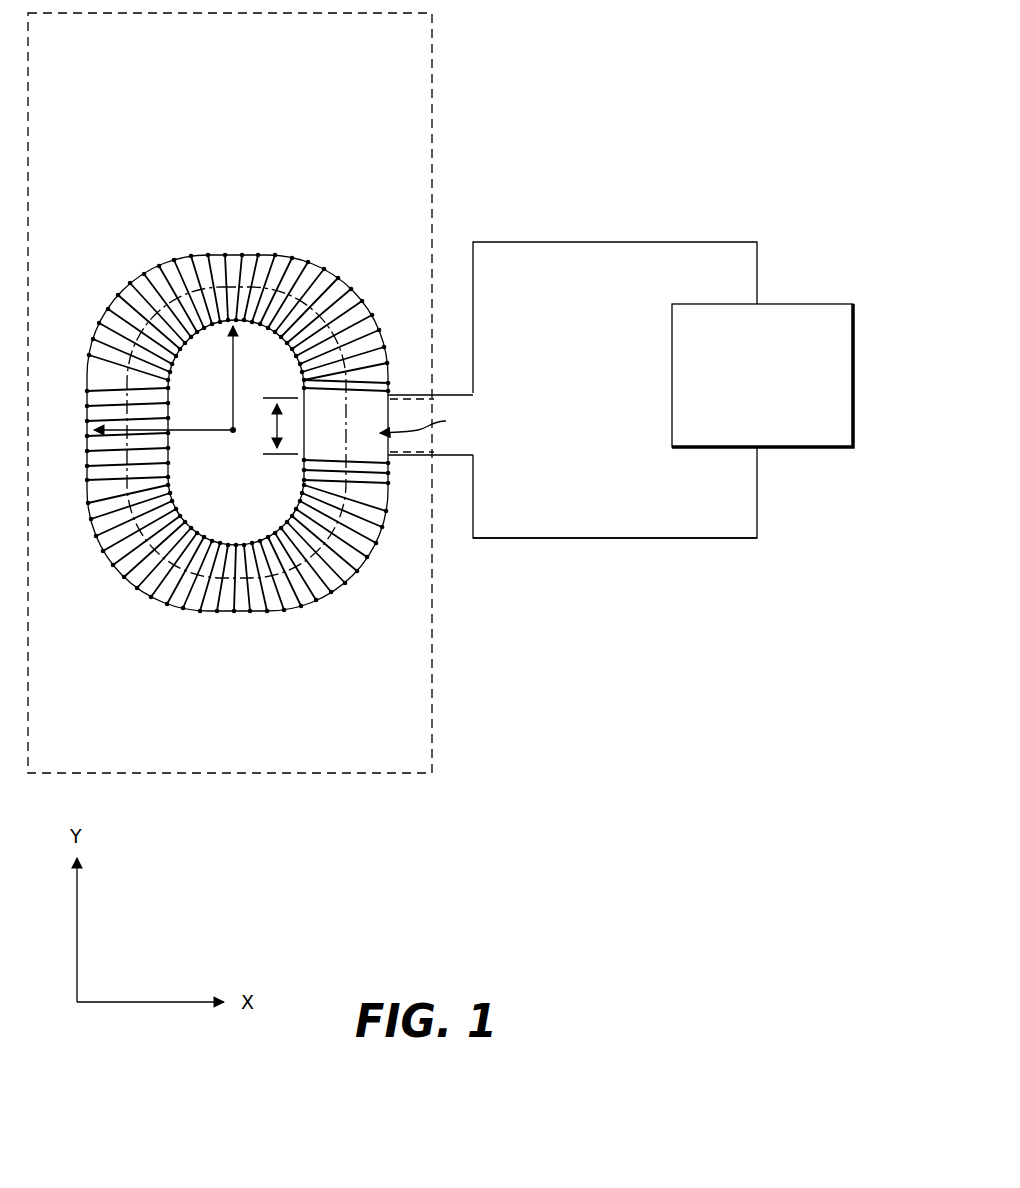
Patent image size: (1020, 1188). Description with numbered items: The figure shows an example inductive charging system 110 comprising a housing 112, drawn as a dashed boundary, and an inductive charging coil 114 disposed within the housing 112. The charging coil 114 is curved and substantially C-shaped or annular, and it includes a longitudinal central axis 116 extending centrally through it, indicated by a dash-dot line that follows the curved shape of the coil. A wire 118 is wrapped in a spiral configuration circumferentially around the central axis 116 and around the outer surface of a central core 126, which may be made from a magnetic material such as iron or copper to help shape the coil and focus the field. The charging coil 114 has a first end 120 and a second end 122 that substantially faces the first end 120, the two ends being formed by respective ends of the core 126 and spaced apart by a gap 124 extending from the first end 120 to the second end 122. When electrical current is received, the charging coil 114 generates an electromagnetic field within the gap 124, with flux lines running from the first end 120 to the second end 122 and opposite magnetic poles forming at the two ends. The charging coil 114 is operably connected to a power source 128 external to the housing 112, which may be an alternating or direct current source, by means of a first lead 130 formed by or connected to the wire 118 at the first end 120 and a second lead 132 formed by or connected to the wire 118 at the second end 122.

The inductive charging system 110 is at (710, 86).
The housing 112 is at (433, 77).
The inductive charging coil 114 is at (148, 262).
The longitudinal central axis 116 is at (338, 320).
The wire 118 is at (222, 255).
The first end 120 is at (366, 452).
The second end 122 is at (366, 402).
The gap 124 is at (426, 420).
The central core 126 is at (273, 275).
The power source 128 is at (832, 304).
The first lead 130 is at (662, 538).
The second lead 132 is at (713, 242).